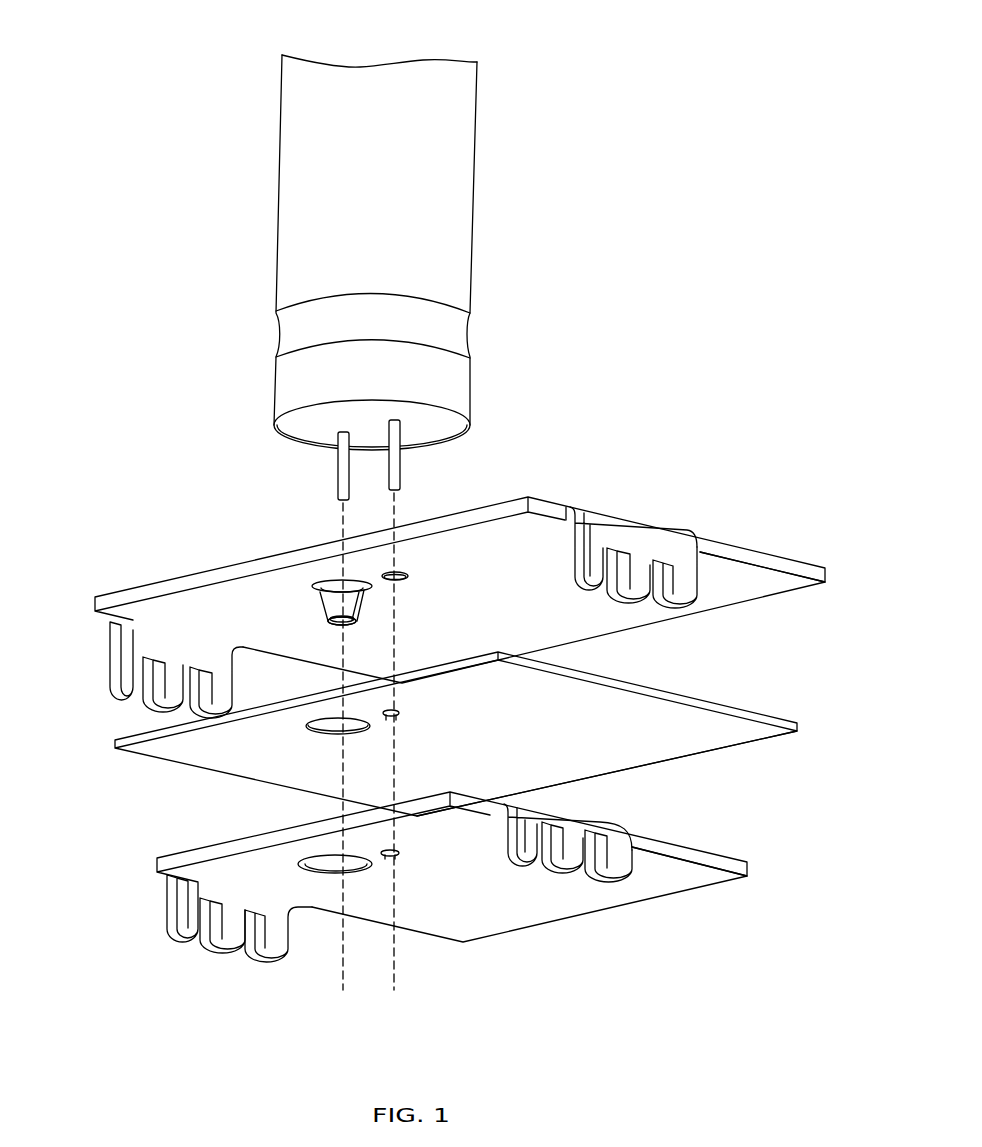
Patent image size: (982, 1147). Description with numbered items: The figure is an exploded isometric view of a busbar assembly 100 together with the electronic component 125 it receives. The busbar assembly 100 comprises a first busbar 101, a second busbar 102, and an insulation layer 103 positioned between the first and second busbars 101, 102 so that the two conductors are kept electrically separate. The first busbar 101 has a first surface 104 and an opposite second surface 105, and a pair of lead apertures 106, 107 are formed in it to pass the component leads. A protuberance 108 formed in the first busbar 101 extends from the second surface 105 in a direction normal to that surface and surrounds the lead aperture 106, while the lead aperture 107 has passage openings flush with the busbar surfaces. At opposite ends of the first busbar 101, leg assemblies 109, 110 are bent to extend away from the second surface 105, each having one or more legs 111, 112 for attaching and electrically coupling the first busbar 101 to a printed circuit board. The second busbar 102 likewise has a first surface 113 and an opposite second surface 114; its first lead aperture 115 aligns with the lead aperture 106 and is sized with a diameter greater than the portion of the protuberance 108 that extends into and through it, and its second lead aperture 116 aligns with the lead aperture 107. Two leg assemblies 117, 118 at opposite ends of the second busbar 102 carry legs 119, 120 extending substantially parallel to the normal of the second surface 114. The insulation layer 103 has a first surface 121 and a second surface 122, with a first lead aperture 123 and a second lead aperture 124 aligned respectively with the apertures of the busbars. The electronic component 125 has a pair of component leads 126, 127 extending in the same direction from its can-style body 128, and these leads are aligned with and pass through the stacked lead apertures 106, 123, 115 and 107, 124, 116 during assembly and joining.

The busbar assembly 100 is at (156, 40).
The first busbar 101 is at (112, 562).
The second busbar 102 is at (163, 878).
The insulation layer 103 is at (133, 766).
The first surface 104 is at (803, 560).
The second surface 105 is at (748, 580).
The lead aperture 106 is at (330, 636).
The lead aperture 107 is at (405, 590).
The protuberance 108 is at (318, 603).
The leg assembly 109 is at (138, 643).
The leg assembly 110 is at (623, 530).
The legs 111 is at (208, 703).
The legs 112 is at (682, 597).
The first surface 113 is at (740, 858).
The second surface 114 is at (678, 872).
The first lead aperture 115 is at (318, 882).
The second lead aperture 116 is at (403, 862).
The leg assembly 117 is at (208, 893).
The leg assembly 118 is at (602, 830).
The legs 119 is at (273, 957).
The legs 120 is at (615, 873).
The first surface 121 is at (723, 730).
The second surface 122 is at (712, 731).
The first lead aperture 123 is at (318, 742).
The second lead aperture 124 is at (402, 720).
The electronic component 125 is at (421, 36).
The component lead 126 is at (337, 470).
The component lead 127 is at (402, 463).
The body 128 is at (473, 235).